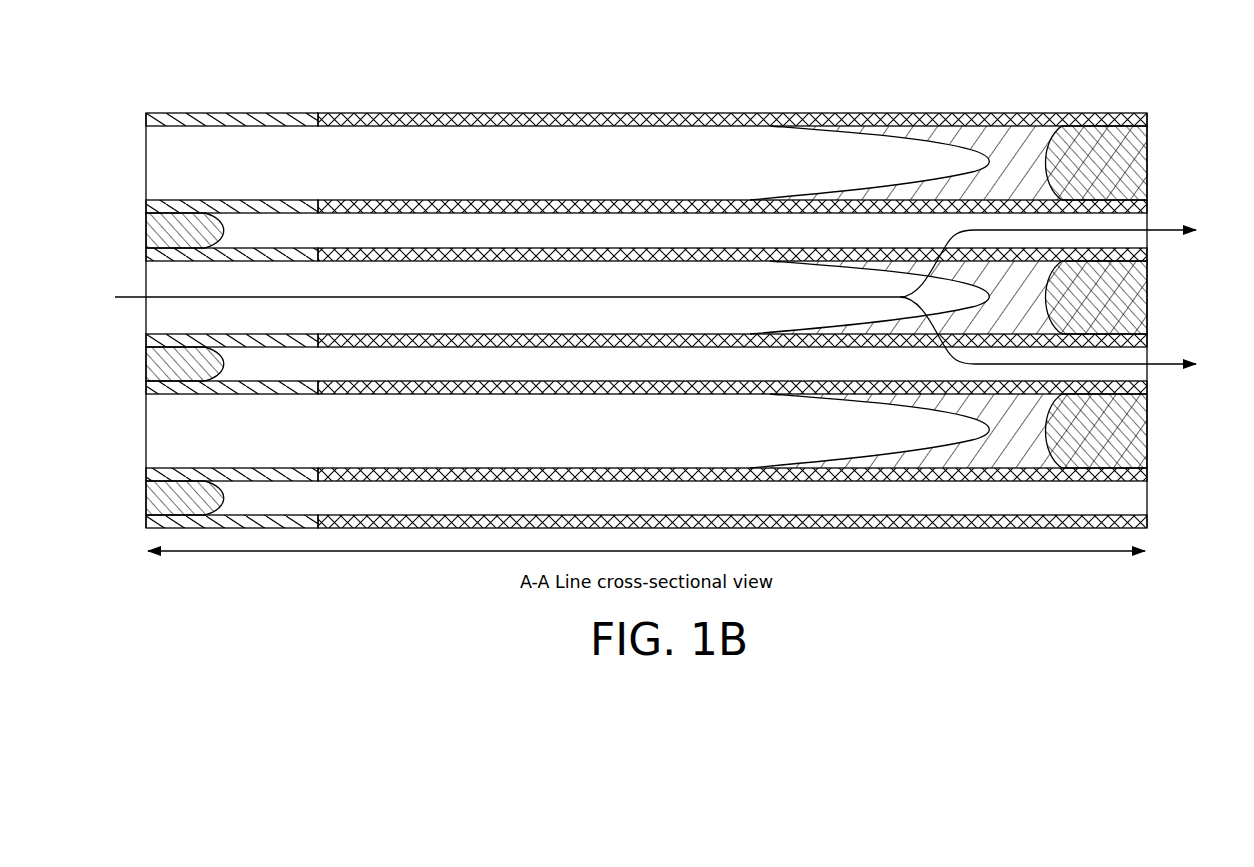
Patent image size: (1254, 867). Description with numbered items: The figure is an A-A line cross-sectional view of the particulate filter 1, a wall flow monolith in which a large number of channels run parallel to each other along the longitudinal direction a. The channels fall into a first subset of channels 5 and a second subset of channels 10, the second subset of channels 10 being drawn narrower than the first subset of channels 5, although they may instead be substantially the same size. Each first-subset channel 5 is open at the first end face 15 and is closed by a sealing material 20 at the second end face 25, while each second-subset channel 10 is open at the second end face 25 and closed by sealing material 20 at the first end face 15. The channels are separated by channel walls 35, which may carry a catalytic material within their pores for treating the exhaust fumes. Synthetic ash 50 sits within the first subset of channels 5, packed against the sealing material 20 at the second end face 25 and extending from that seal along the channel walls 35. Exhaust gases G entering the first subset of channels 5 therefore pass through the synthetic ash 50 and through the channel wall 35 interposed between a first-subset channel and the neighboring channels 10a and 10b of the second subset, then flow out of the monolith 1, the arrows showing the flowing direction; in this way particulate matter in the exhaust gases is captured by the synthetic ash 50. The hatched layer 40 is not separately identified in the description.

The particulate filter 1 is at (652, 282).
The first subset of channels 5 is at (148, 170).
The second subset of channels 10 is at (1138, 498).
The channel 10a is at (1137, 238).
The channel 10b is at (1137, 371).
The first end face 15 is at (125, 135).
The sealing material 20 is at (1148, 163).
The second end face 25 is at (1157, 135).
The channel wall 35 is at (623, 200).
The cross-hatched layer 40 is at (748, 113).
The synthetic ash 50 is at (987, 138).
The exhaust gases G is at (495, 297).
The longitudinal direction a is at (275, 552).